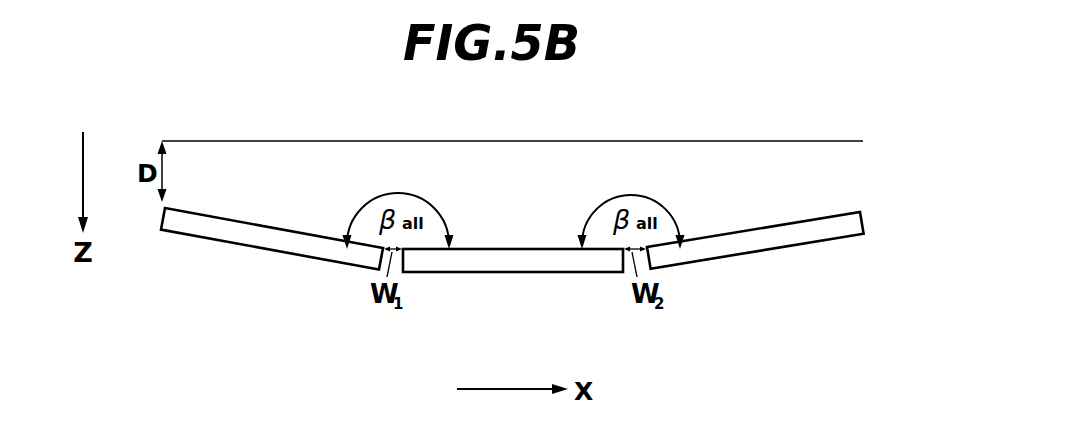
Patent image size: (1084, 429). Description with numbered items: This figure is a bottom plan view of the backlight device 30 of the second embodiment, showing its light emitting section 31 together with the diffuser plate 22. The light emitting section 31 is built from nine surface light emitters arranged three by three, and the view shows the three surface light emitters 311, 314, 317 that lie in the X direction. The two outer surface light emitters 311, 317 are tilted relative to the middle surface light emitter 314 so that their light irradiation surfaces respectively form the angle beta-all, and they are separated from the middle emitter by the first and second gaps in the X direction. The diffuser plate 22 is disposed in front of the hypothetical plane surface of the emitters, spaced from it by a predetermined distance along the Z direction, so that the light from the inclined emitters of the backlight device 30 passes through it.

The diffuser plate 22 is at (727, 140).
The light emitting section 31 is at (858, 179).
The surface light emitter 311 is at (235, 235).
The surface light emitter 314 is at (517, 265).
The surface light emitter 317 is at (792, 240).
The backlight device 30 is at (699, 326).